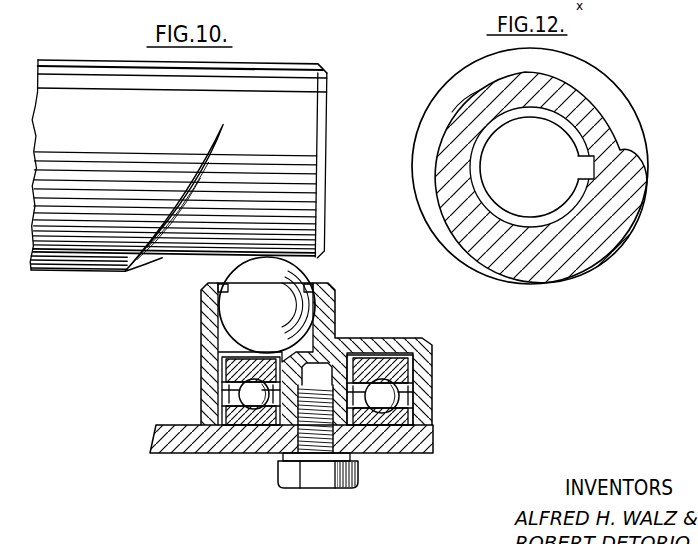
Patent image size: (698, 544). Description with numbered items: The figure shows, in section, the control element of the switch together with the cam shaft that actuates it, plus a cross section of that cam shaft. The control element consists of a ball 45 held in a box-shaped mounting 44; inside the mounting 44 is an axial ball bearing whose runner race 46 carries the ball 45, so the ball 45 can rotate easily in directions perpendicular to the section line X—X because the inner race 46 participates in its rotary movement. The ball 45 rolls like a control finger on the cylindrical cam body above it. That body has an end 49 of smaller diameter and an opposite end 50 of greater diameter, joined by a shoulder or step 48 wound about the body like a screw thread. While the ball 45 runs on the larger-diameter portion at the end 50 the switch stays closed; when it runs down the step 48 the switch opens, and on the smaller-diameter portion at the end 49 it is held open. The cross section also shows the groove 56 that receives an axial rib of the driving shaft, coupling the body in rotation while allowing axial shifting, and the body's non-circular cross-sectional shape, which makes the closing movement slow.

In FIG. 10, the box-shaped mounting 44 is at (327, 308).
In FIG. 10, the ball 45 is at (293, 288).
In FIG. 10, the runner race 46 is at (428, 356).
In FIG. 10, the shoulder or step 48 is at (161, 244).
In FIG. 12, the shoulder or step 48 is at (608, 93).
In FIG. 10, the end of smaller diameter 49 is at (297, 83).
In FIG. 12, the end of greater diameter 50 is at (610, 248).
In FIG. 12, the groove 56 is at (596, 160).